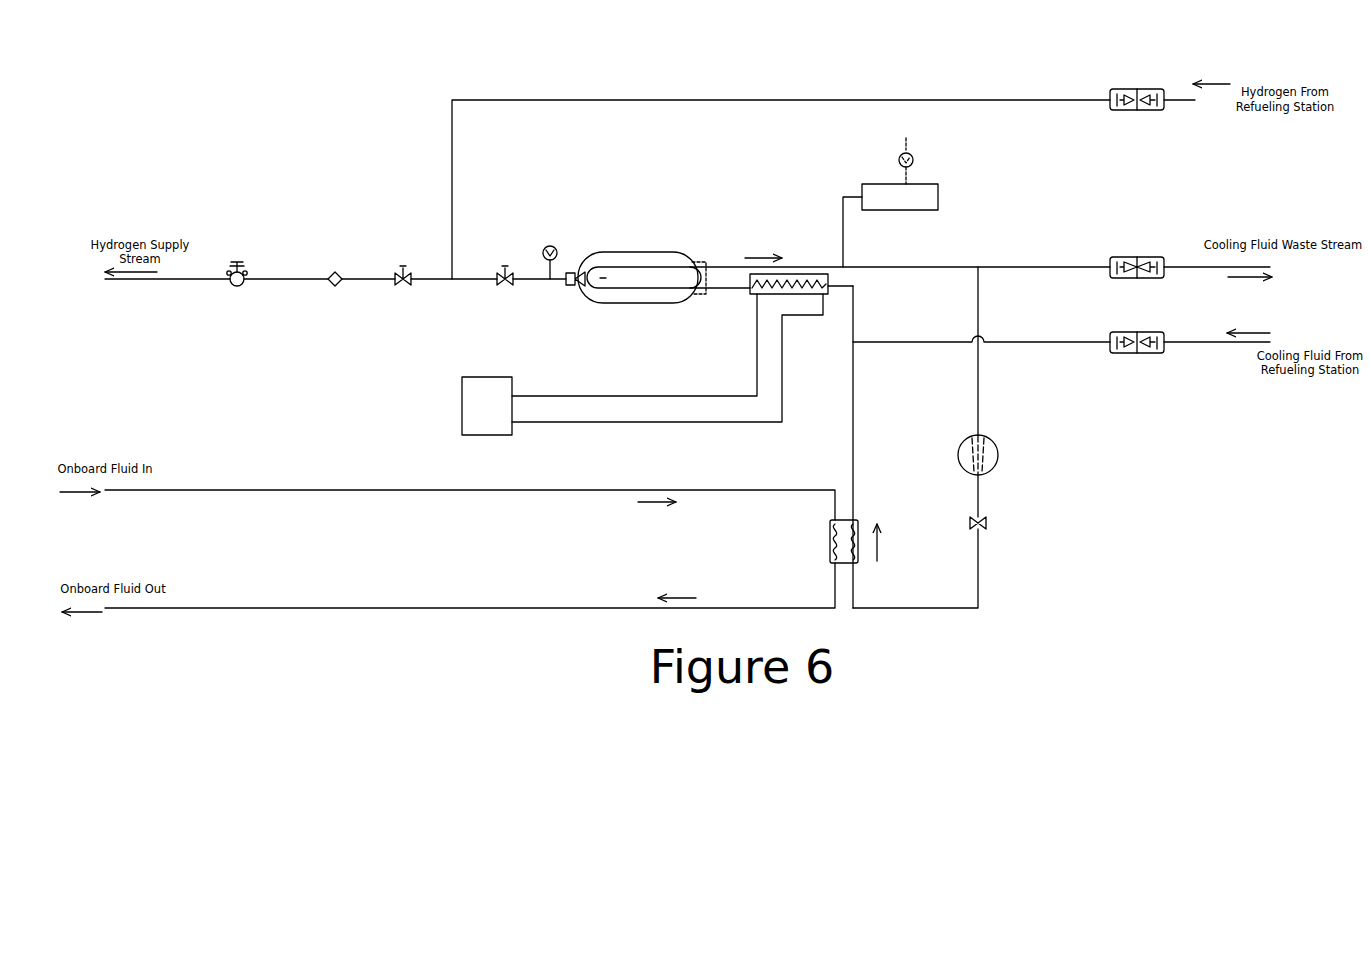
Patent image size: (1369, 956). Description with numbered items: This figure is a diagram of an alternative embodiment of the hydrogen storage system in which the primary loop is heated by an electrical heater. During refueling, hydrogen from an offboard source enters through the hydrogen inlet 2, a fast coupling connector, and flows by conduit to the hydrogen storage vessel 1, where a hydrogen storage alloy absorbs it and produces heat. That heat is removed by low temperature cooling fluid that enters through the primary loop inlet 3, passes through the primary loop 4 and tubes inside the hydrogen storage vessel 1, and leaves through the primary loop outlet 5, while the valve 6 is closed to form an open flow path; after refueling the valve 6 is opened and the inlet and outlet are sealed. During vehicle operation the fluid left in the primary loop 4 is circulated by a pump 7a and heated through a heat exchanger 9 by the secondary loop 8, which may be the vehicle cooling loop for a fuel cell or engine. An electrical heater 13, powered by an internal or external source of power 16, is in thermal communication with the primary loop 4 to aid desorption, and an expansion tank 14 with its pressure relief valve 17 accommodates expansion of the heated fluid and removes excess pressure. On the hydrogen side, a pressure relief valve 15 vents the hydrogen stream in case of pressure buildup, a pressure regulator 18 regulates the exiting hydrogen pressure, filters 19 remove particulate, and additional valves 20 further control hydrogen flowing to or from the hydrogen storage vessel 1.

The hydrogen storage vessel 1 is at (844, 269).
The hydrogen inlet 2 is at (1137, 90).
The primary loop inlet 3 is at (1061, 351).
The primary loop 4 is at (860, 447).
The primary loop outlet 5 is at (1190, 258).
The valve 6 is at (986, 523).
The pump 7a is at (990, 392).
The secondary loop 8 is at (470, 505).
The heat exchanger 9 is at (481, 564).
The electrical heater 13 is at (752, 293).
The expansion tank 14 is at (890, 225).
The pressure relief valve 15 is at (542, 252).
The source of power 16 is at (642, 364).
The pressure relief valve 17 is at (916, 161).
The pressure regulator 18 is at (237, 283).
The filters 19 is at (572, 284).
The valves 20 is at (454, 285).